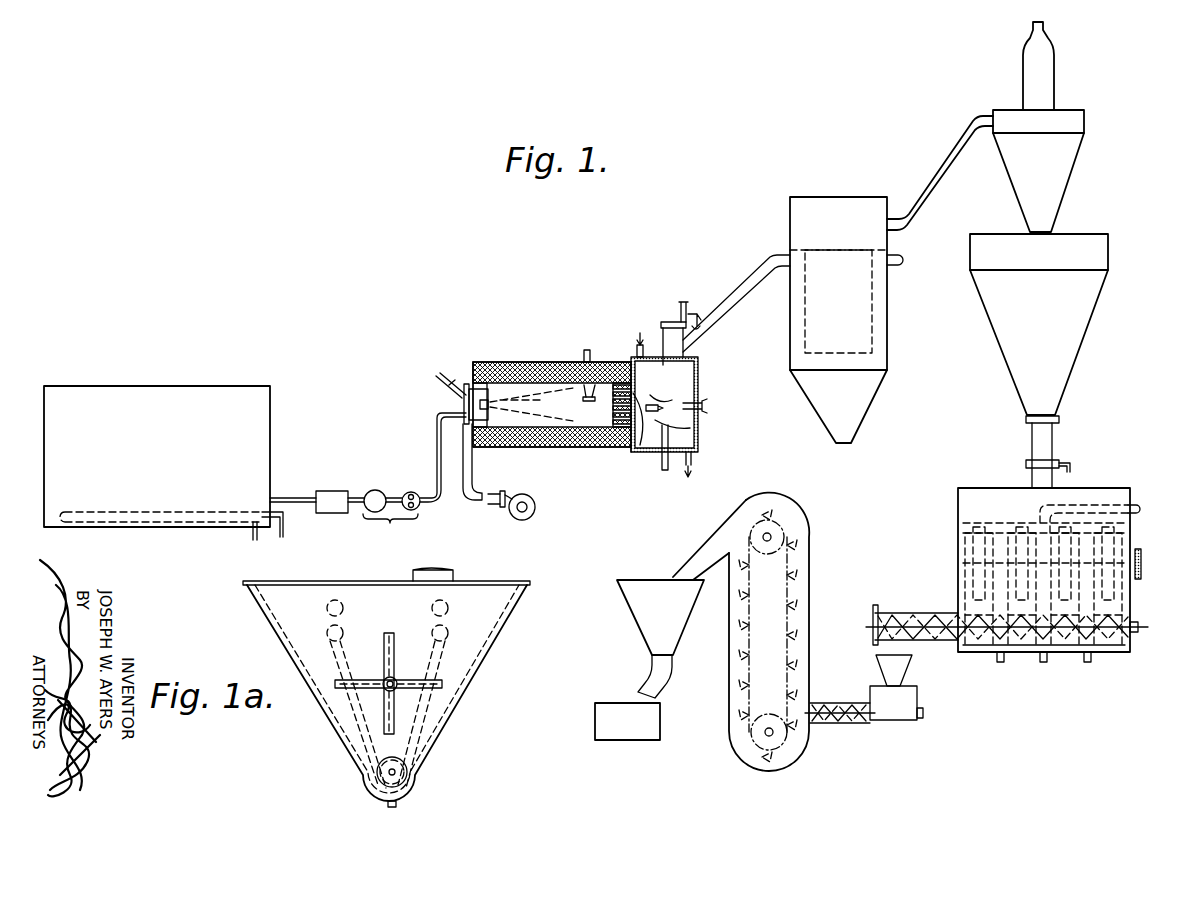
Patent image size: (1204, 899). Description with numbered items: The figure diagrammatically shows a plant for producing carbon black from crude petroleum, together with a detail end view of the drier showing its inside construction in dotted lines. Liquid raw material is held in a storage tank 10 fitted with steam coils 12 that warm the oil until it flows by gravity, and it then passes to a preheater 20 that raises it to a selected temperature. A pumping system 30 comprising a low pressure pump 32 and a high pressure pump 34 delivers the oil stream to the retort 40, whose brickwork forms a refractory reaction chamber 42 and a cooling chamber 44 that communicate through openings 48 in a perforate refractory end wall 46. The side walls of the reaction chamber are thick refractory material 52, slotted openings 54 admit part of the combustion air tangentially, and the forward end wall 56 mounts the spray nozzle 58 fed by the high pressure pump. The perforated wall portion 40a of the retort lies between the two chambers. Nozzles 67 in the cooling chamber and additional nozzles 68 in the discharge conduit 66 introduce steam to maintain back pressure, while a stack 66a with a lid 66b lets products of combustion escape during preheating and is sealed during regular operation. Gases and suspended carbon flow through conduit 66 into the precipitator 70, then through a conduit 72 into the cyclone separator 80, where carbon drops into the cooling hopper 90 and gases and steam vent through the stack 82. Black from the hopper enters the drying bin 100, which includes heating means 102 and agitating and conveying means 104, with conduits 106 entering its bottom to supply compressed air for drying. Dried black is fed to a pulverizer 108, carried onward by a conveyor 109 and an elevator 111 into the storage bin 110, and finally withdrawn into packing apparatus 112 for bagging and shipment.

In FIG. 1, the storage tank 10 is at (146, 400).
In FIG. 1, the steam coils 12 is at (105, 524).
In FIG. 1, the preheater 20 is at (324, 500).
In FIG. 1, the pumping system 30 is at (390, 530).
In FIG. 1, the low pressure pump 32 is at (372, 490).
In FIG. 1, the high pressure pump 34 is at (411, 492).
In FIG. 1, the retort 40 is at (564, 352).
In FIG. 1, the perforated end wall 40a is at (558, 375).
In FIG. 1, the reaction chamber 42 is at (507, 428).
In FIG. 1, the cooling chamber 44 is at (698, 388).
In FIG. 1, the perforate refractory end wall 46 is at (633, 440).
In FIG. 1, the openings 48 is at (636, 397).
In FIG. 1, the refractory material 52 is at (476, 362).
In FIG. 1, the slotted openings 54 is at (596, 394).
In FIG. 1, the forward end wall 56 is at (466, 378).
In FIG. 1, the spray nozzle 58 is at (464, 404).
In FIG. 1, the discharge conduit 66 is at (729, 303).
In FIG. 1, the stack 66a is at (663, 333).
In FIG. 1, the lid 66b is at (670, 322).
In FIG. 1, the nozzles 68 is at (684, 312).
In FIG. 1, the nozzles 67 is at (672, 440).
In FIG. 1, the precipitator 70 is at (790, 220).
In FIG. 1, the conduit 72 is at (931, 180).
In FIG. 1, the cyclone separator 80 is at (1062, 166).
In FIG. 1, the stack 82 is at (1040, 75).
In FIG. 1, the cooling hopper 90 is at (1063, 350).
In FIG. 1, the drying bin 100 is at (1122, 490).
In FIG. 1A, the drying bin 100 is at (482, 602).
In FIG. 1, the heating means 102 is at (1141, 560).
In FIG. 1A, the heating means 102 is at (450, 640).
In FIG. 1, the agitating and conveying means 104 is at (1092, 654).
In FIG. 1A, the agitating and conveying means 104 is at (405, 780).
In FIG. 1, the conduits 106 is at (1087, 662).
In FIG. 1, the pulverizer 108 is at (917, 690).
In FIG. 1, the conveyor 109 is at (860, 724).
In FIG. 1, the storage bin 110 is at (637, 615).
In FIG. 1, the elevator 111 is at (767, 632).
In FIG. 1, the packing apparatus 112 is at (628, 728).